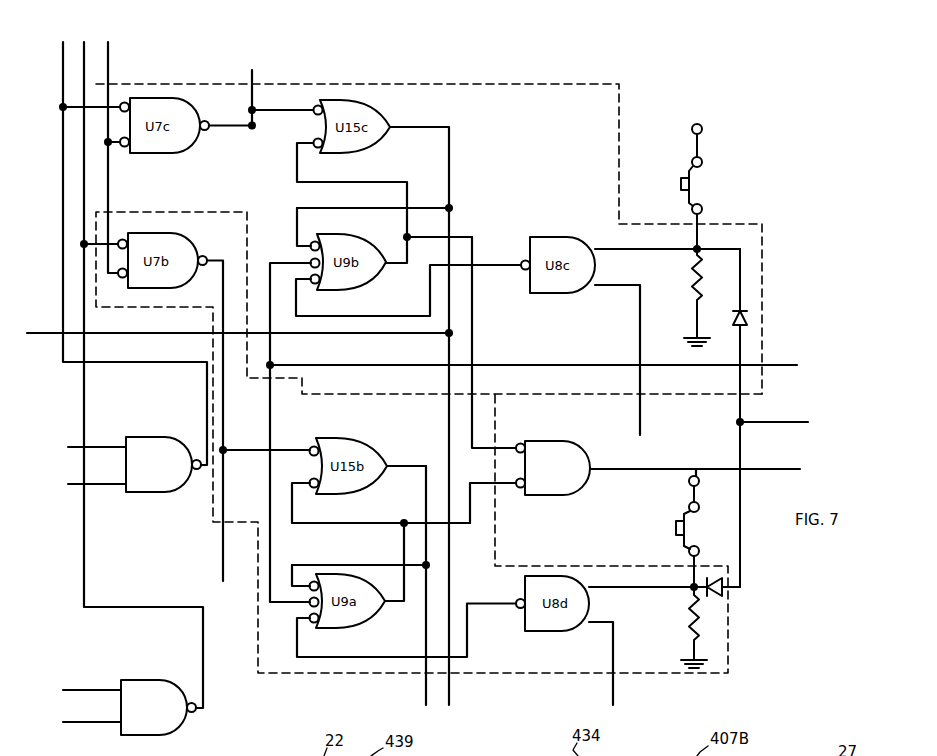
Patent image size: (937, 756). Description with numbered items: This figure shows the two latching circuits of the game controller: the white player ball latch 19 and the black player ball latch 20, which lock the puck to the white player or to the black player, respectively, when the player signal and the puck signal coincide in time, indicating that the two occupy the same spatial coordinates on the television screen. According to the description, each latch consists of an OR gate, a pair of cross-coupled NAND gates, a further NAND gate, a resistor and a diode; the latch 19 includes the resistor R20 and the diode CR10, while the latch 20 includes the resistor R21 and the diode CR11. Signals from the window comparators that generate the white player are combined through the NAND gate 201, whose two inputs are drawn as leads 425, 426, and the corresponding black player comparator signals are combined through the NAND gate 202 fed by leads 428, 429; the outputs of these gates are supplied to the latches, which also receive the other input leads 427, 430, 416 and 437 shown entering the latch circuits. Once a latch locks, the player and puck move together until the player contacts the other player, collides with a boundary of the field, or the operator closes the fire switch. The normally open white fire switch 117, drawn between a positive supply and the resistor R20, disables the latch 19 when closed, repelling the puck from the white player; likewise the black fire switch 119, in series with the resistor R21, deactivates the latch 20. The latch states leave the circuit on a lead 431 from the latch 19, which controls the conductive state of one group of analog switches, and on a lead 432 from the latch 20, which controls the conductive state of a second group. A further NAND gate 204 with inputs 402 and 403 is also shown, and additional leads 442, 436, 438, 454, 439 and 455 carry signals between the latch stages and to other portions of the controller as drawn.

The conductor 427 is at (60, 82).
The conductor 430 is at (86, 50).
The conductor 416 is at (109, 73).
The conductor 437 is at (252, 70).
The white player ball latch 19 is at (621, 104).
The black player ball latch 20 is at (730, 655).
The white fire switch 117 is at (700, 190).
The resistor R20 is at (688, 300).
The diode CR10 is at (748, 312).
The conductor 442 is at (770, 367).
The conductor 436 is at (773, 420).
The conductor 438 is at (656, 428).
The conductor 454 is at (762, 470).
The black fire switch 119 is at (676, 528).
The diode CR11 is at (714, 592).
The resistor R21 is at (686, 624).
The gate input 402 is at (510, 447).
The gate input 403 is at (512, 485).
The NAND gate 204 is at (560, 448).
The lead 431 is at (60, 334).
The lead 432 is at (425, 686).
The conductor 439 is at (613, 688).
The conductor 455 is at (220, 550).
The input line 425 is at (68, 446).
The input line 426 is at (68, 484).
The NAND gate 201 is at (162, 476).
The input line 428 is at (68, 688).
The input line 429 is at (80, 723).
The NAND gate 202 is at (135, 690).